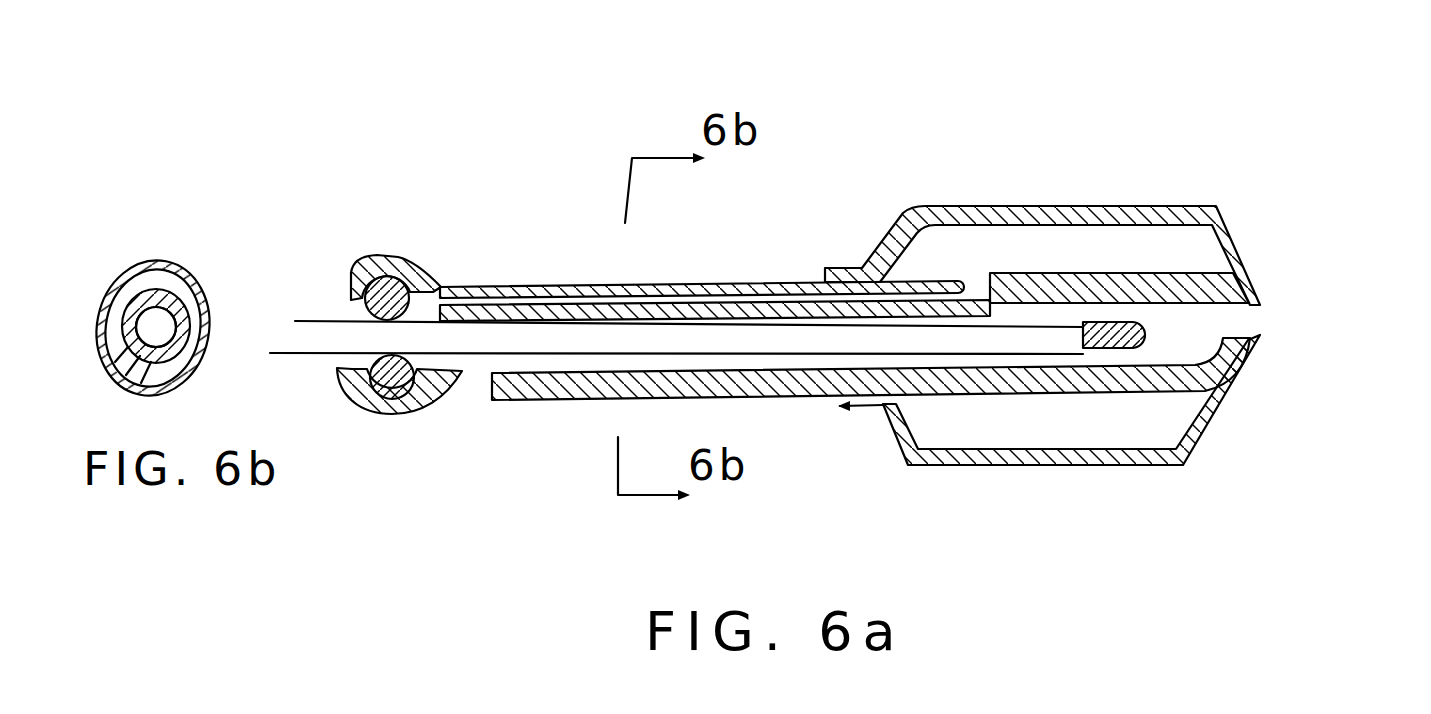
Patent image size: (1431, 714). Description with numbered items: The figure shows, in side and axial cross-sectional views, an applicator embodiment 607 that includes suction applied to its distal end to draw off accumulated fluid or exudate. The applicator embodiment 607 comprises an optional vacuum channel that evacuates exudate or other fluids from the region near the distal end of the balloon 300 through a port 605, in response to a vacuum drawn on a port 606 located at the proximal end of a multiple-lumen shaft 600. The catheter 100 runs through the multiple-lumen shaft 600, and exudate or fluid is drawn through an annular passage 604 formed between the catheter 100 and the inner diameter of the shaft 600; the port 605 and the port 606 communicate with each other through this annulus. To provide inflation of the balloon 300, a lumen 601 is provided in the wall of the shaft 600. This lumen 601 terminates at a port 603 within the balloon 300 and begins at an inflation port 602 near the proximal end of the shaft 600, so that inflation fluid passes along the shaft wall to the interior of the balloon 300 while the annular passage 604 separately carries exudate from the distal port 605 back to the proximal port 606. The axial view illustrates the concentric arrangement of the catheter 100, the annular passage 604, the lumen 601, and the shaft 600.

In FIG. 6A, the catheter 100 is at (289, 355).
In FIG. 6B, the catheter 100 is at (170, 312).
In FIG. 6A, the balloon 300 is at (1058, 208).
In FIG. 6A, the multiple-lumen shaft 600 is at (662, 282).
In FIG. 6A, the lumen 601 is at (497, 286).
In FIG. 6B, the lumen 601 is at (172, 263).
In FIG. 6A, the inflation port 602 is at (455, 274).
In FIG. 6A, the port 603 is at (977, 280).
In FIG. 6A, the annular passage 604 is at (562, 366).
In FIG. 6B, the annular passage 604 is at (140, 305).
In FIG. 6A, the port 605 is at (1242, 325).
In FIG. 6A, the port 606 is at (478, 383).
In FIG. 6A, the applicator embodiment 607 is at (897, 58).